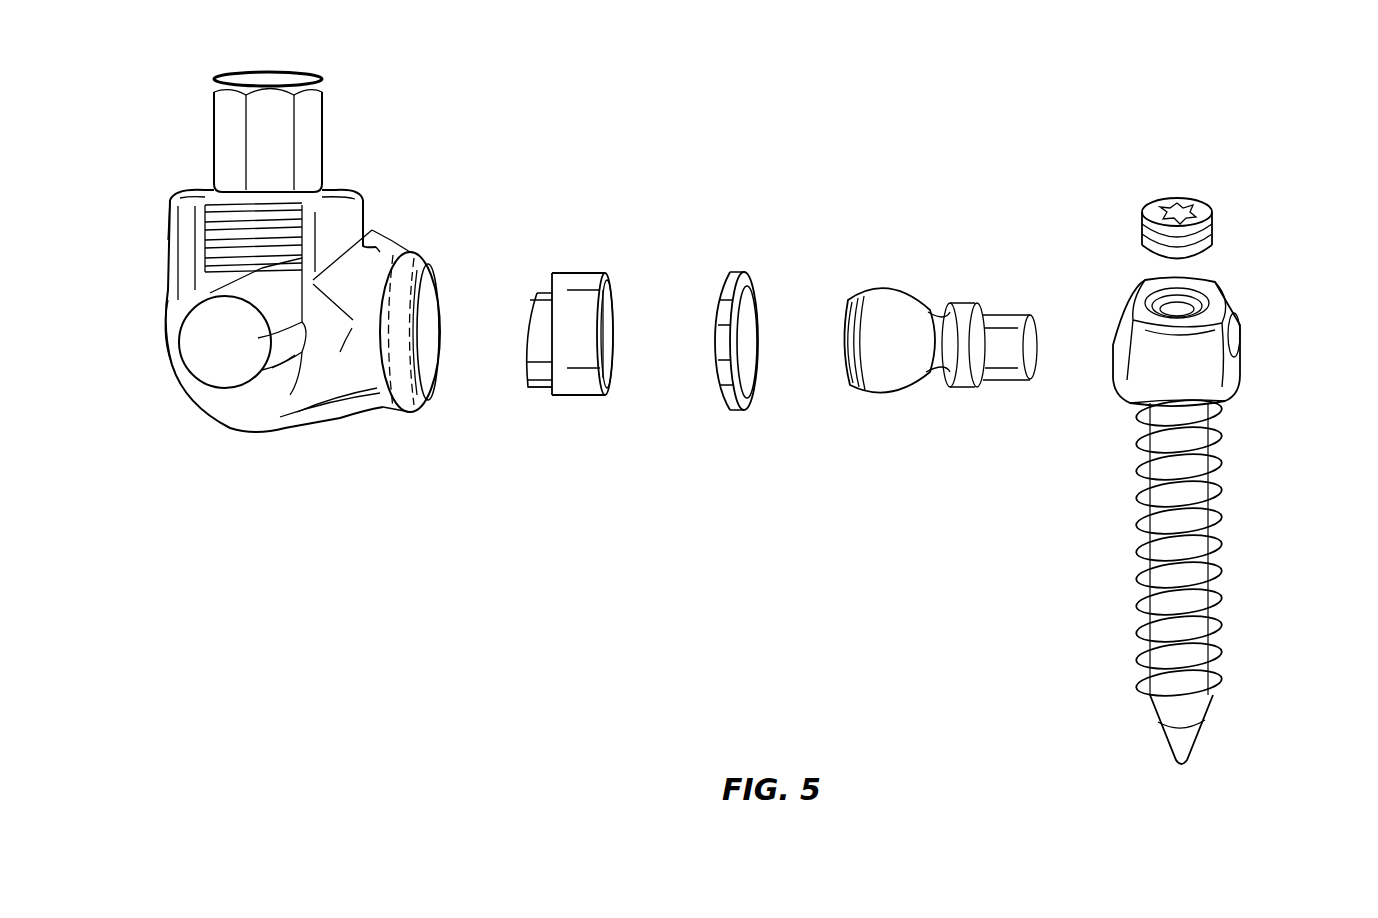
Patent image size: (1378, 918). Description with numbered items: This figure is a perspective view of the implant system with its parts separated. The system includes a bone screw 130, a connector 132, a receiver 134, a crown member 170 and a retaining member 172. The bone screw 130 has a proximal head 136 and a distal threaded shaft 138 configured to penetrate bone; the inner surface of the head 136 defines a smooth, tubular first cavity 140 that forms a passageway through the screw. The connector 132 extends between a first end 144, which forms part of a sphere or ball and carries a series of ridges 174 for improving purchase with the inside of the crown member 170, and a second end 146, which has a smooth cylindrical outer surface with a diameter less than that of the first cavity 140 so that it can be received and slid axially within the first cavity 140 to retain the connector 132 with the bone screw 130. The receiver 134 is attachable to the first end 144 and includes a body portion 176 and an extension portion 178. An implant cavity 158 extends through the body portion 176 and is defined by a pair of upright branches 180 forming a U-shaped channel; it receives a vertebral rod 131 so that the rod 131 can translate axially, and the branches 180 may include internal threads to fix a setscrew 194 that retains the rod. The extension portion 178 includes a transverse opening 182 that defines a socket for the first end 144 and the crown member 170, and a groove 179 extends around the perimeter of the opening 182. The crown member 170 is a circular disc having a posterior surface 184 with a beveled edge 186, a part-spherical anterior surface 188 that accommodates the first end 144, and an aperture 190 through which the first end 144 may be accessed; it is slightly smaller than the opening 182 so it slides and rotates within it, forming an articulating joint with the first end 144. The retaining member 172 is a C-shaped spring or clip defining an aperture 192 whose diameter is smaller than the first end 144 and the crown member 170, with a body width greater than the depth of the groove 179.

The bone screw 130 is at (1243, 498).
The vertebral rod 131 is at (197, 335).
The connector 132 is at (915, 408).
The receiver 134 is at (258, 449).
The proximal head 136 is at (1148, 343).
The distal threaded shaft 138 is at (1185, 597).
The first cavity 140 is at (1245, 330).
The first end 144 is at (890, 308).
The second end 146 is at (1010, 330).
The implant cavity 158 is at (268, 370).
The crown member 170 is at (575, 250).
The retaining member 172 is at (742, 245).
The ridges 174 is at (850, 337).
The body portion 176 is at (175, 366).
The extension portion 178 is at (355, 404).
The groove 179 is at (405, 262).
The upright branches 180 is at (172, 200).
The transverse opening 182 is at (434, 340).
The posterior surface 184 is at (533, 305).
The beveled edge 186 is at (552, 394).
The anterior surface 188 is at (606, 325).
The aperture 190 is at (612, 352).
The aperture 192 is at (753, 347).
The setscrew 194 is at (228, 117).